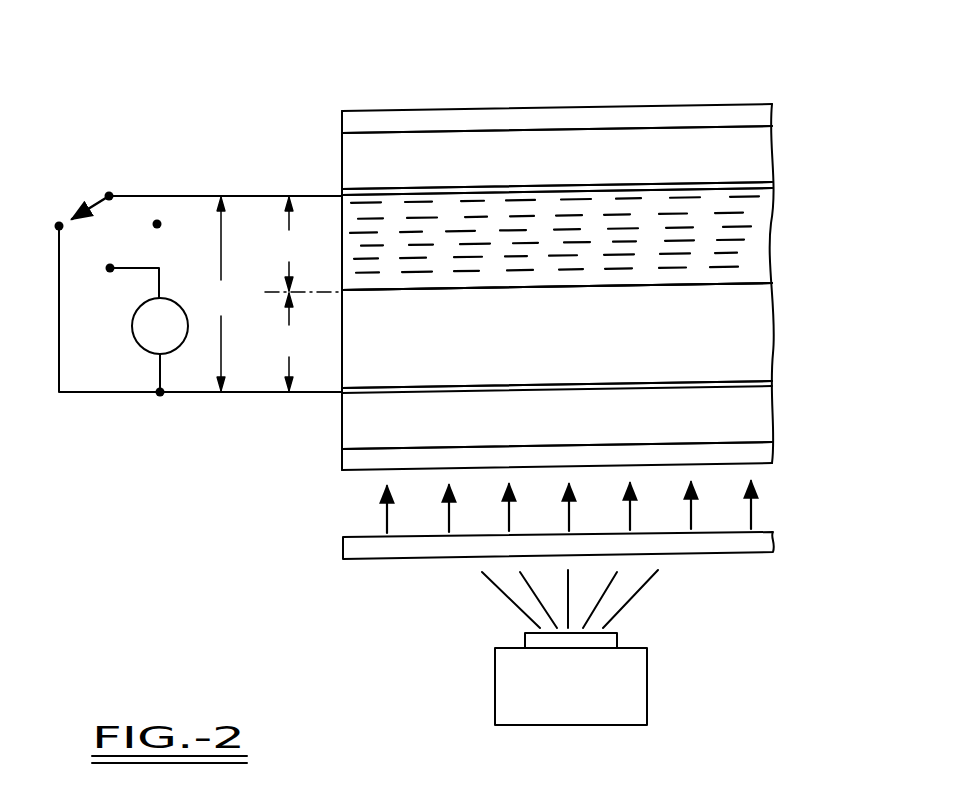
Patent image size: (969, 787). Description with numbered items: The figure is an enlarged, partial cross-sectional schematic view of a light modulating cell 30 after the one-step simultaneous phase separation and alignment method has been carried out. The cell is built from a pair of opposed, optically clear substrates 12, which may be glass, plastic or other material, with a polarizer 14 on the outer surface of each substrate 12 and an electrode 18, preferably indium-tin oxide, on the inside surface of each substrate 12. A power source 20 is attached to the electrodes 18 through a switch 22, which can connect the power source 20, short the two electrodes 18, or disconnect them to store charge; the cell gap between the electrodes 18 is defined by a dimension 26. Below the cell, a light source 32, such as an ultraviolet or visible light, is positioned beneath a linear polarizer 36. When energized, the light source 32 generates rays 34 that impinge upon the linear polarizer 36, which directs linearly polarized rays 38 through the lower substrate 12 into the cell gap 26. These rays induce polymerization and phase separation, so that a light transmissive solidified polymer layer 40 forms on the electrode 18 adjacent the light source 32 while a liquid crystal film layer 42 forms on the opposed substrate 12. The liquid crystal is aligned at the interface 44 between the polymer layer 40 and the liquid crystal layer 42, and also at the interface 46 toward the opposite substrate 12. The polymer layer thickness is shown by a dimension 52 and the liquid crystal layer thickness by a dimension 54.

The substrate 12 is at (557, 287).
The polarizer 14 is at (557, 287).
The electrode 18 is at (557, 287).
The power source 20 is at (150, 350).
The switch 22 is at (91, 201).
The cell gap thickness 26 is at (220, 294).
The light modulating cell 30 is at (283, 451).
The light source 32 is at (647, 680).
The rays 34 is at (645, 596).
The linear polarizer 36 is at (343, 548).
The linearly polarized rays 38 is at (358, 498).
The polymer layer 40 is at (557, 335).
The liquid crystal film layer 42 is at (557, 239).
The interface 44 is at (557, 286).
The interface 46 is at (557, 185).
The polymer layer thickness 52 is at (289, 342).
The liquid crystal layer thickness 54 is at (289, 244).